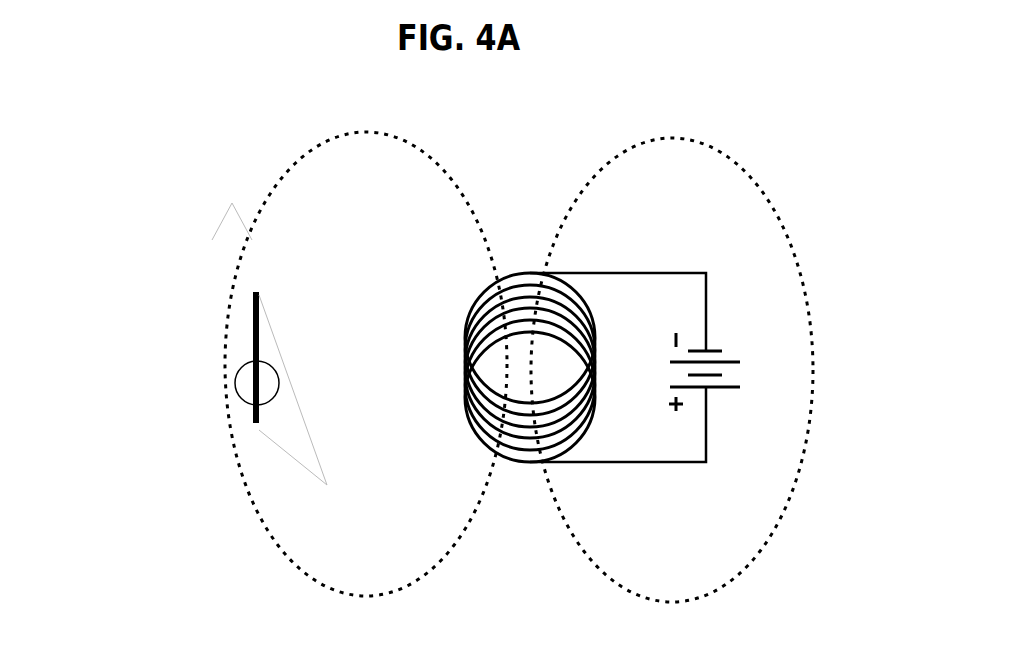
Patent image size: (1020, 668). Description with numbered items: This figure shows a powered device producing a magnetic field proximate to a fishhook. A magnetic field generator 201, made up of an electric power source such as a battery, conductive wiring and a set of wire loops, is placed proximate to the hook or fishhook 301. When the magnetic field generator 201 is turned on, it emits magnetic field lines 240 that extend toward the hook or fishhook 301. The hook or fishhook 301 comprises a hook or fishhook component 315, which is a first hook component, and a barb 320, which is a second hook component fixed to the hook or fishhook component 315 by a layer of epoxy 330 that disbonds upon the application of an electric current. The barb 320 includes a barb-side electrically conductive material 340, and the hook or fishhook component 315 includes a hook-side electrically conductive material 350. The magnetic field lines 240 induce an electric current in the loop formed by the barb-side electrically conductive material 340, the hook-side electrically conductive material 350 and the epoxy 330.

The magnetic field generator 201 is at (727, 510).
The magnetic field lines 240 is at (519, 359).
The hook or fishhook 301 is at (190, 203).
The hook or fishhook component 315 is at (225, 277).
The barb 320 is at (312, 390).
The epoxy 330 is at (260, 288).
The barb-side electrically conductive material 340 is at (275, 355).
The hook-side electrically conductive material 350 is at (230, 383).